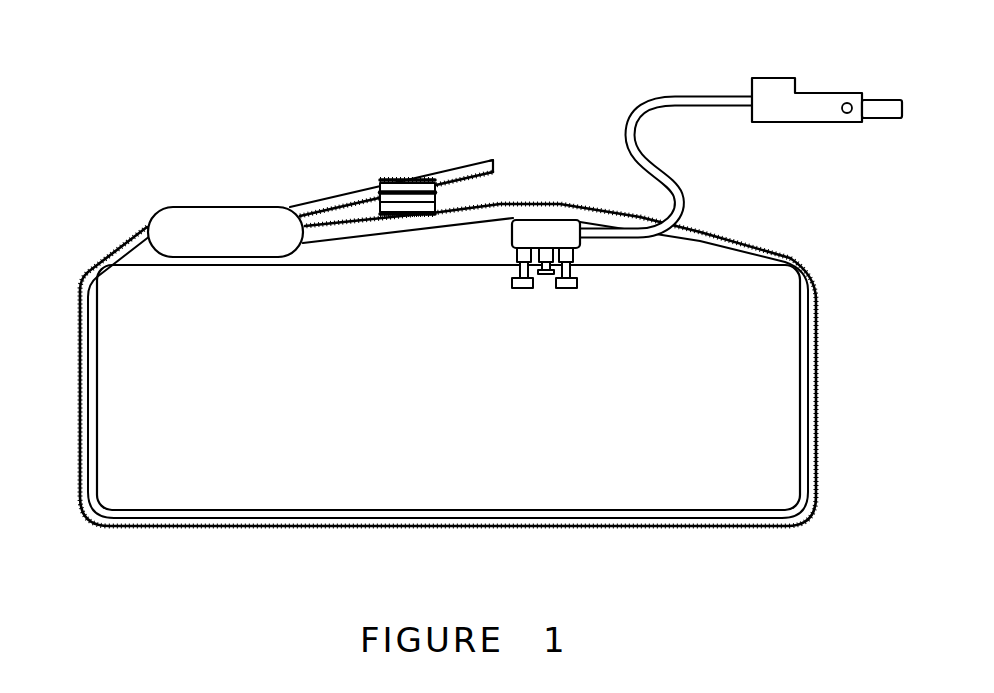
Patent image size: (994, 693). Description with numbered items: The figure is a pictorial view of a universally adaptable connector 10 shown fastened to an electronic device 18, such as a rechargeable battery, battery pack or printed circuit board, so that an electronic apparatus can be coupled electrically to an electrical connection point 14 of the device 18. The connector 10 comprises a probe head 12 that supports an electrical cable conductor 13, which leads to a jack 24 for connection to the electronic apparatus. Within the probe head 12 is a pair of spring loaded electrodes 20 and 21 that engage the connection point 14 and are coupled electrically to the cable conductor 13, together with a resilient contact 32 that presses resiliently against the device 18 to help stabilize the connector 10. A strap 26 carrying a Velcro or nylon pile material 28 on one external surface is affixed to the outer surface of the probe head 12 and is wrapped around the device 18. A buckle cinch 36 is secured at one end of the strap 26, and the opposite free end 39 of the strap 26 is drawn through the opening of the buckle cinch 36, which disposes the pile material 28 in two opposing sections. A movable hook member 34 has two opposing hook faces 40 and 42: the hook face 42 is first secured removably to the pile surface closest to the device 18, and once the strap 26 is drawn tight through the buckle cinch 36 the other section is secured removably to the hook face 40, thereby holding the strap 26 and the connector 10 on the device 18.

The universally adaptable connector 10 is at (768, 560).
The probe head 12 is at (557, 233).
The electrical cable conductor 13 is at (735, 95).
The electrical connection point 14 is at (505, 300).
The electronic device 18 is at (125, 468).
The spring loaded electrode 20 is at (512, 275).
The spring loaded electrode 21 is at (577, 278).
The jack 24 is at (835, 92).
The strap 26 is at (808, 318).
The Velcro or nylon pile material 28 is at (122, 237).
The resilient contact 32 is at (548, 272).
The movable hook member 34 is at (442, 183).
The buckle cinch 36 is at (170, 207).
The free end 39 is at (492, 150).
The hook face 40 is at (367, 172).
The hook face 42 is at (380, 212).